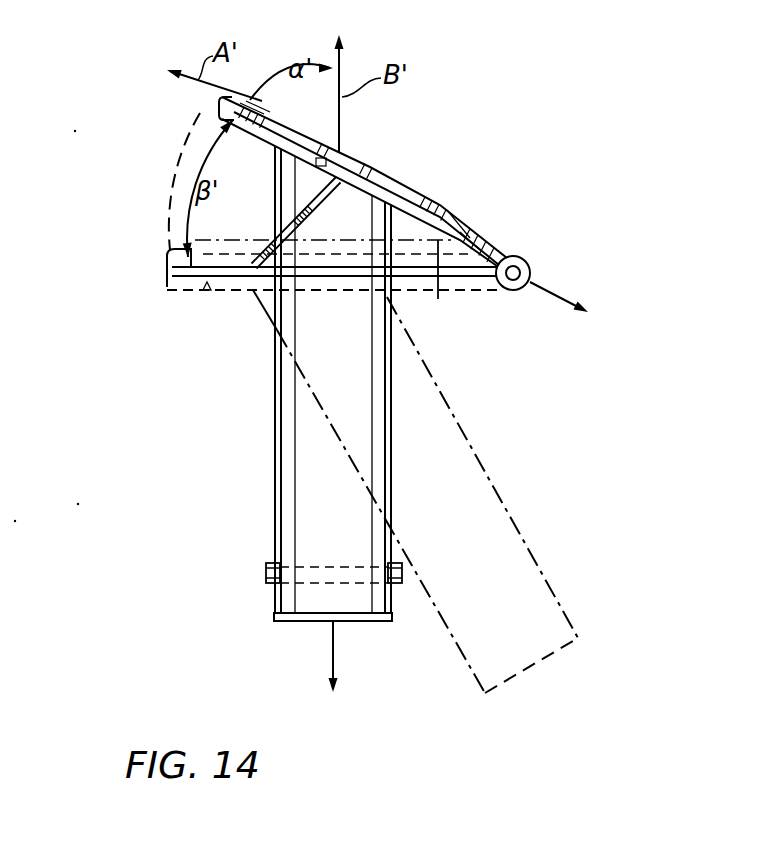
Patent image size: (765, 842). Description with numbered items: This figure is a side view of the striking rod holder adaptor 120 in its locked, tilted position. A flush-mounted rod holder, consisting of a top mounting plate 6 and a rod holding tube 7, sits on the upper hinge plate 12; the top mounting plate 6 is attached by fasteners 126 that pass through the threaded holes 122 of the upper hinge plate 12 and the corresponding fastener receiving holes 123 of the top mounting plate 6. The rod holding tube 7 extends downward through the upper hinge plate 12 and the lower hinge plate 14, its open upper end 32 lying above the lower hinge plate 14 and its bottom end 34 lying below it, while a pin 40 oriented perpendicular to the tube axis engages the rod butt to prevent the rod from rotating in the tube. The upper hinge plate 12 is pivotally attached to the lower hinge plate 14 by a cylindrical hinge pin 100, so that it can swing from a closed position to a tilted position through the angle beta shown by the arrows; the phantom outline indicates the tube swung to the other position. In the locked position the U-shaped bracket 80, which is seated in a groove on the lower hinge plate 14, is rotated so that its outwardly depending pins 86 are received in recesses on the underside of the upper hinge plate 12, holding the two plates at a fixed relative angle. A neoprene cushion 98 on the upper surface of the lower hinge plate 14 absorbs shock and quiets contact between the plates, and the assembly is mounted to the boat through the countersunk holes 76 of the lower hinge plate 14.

The upper hinge plate 12 is at (238, 96).
The pins 86 is at (338, 152).
The open upper end 32 is at (381, 175).
The top mounting plate 6 is at (428, 199).
The fasteners 126 is at (446, 198).
The fastener receiving holes 123 is at (462, 208).
The striking rod holder adaptor 120 is at (492, 238).
The hinge pin 100 is at (531, 268).
The threaded holes 122 is at (440, 302).
The U-shaped bracket 80 is at (306, 212).
The lower hinge plate 14 is at (168, 288).
The cushion 98 is at (170, 270).
The countersunk holes 76 is at (207, 291).
The rod holding tube 7 is at (274, 470).
The pin 40 is at (266, 574).
The bottom end 34 is at (364, 622).